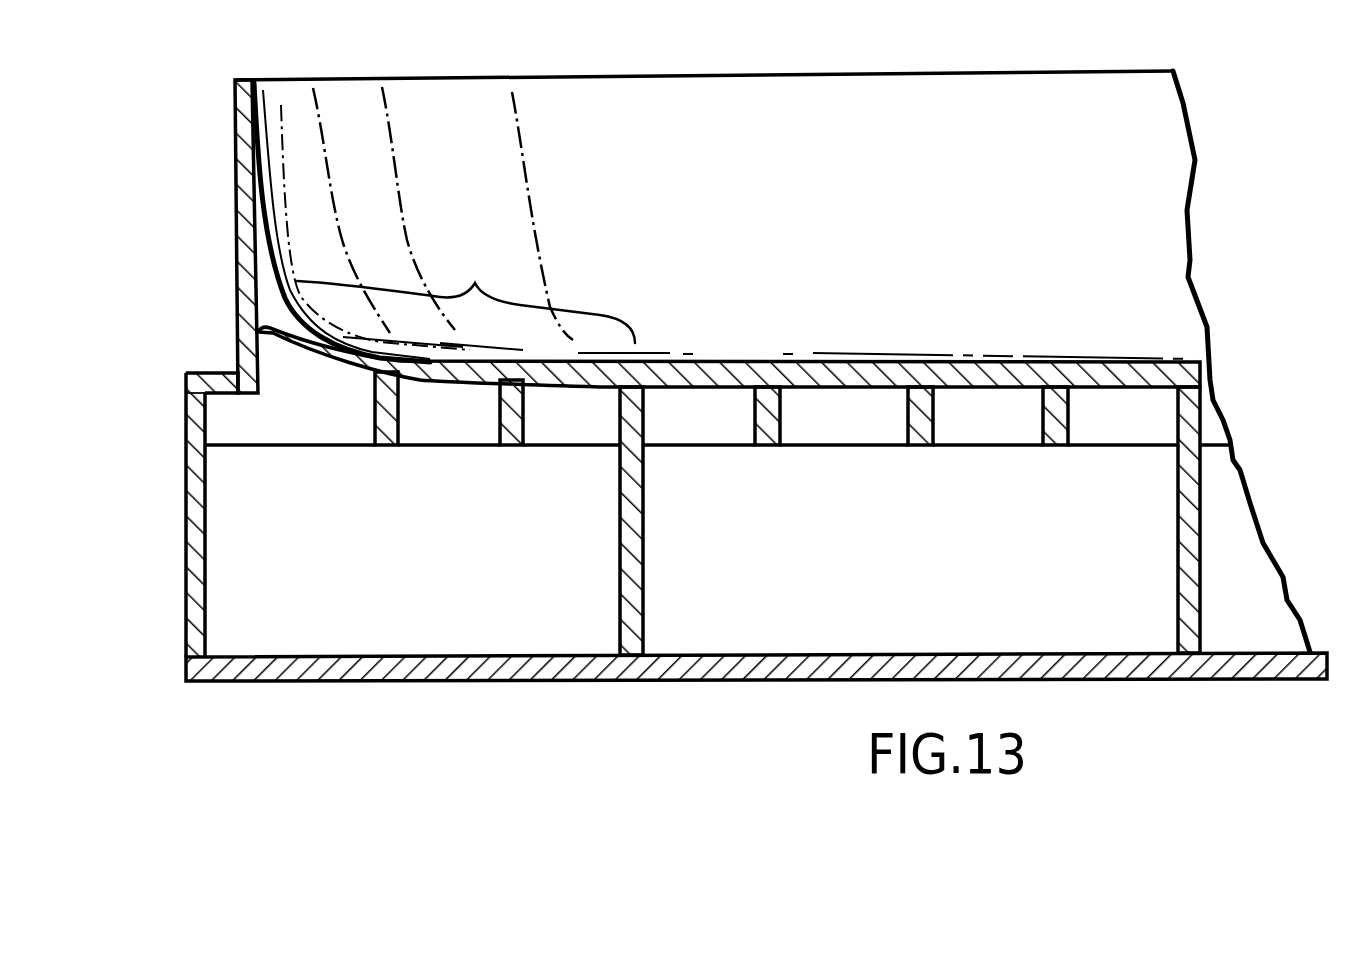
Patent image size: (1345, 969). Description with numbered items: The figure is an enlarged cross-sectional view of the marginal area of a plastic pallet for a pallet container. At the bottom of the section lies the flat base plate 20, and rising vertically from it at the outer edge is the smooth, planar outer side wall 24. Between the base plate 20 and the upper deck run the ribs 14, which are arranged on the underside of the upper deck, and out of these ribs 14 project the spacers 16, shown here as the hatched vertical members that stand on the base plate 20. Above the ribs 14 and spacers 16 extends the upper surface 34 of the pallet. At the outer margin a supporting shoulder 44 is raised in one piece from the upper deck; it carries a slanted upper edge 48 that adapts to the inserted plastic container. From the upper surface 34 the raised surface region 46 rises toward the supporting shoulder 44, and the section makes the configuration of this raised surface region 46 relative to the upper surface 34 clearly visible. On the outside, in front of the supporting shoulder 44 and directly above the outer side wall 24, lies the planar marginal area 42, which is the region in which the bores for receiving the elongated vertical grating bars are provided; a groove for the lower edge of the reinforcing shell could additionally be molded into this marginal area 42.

The ribs 14 is at (927, 417).
The spacers 16 is at (647, 560).
The base plate 20 is at (480, 668).
The outer side wall 24 is at (195, 517).
The upper surface 34 is at (847, 373).
The planar marginal area 42 is at (207, 373).
The supporting shoulder 44 is at (233, 157).
The raised surface region 46 is at (466, 215).
The slanted upper edge 48 is at (244, 80).